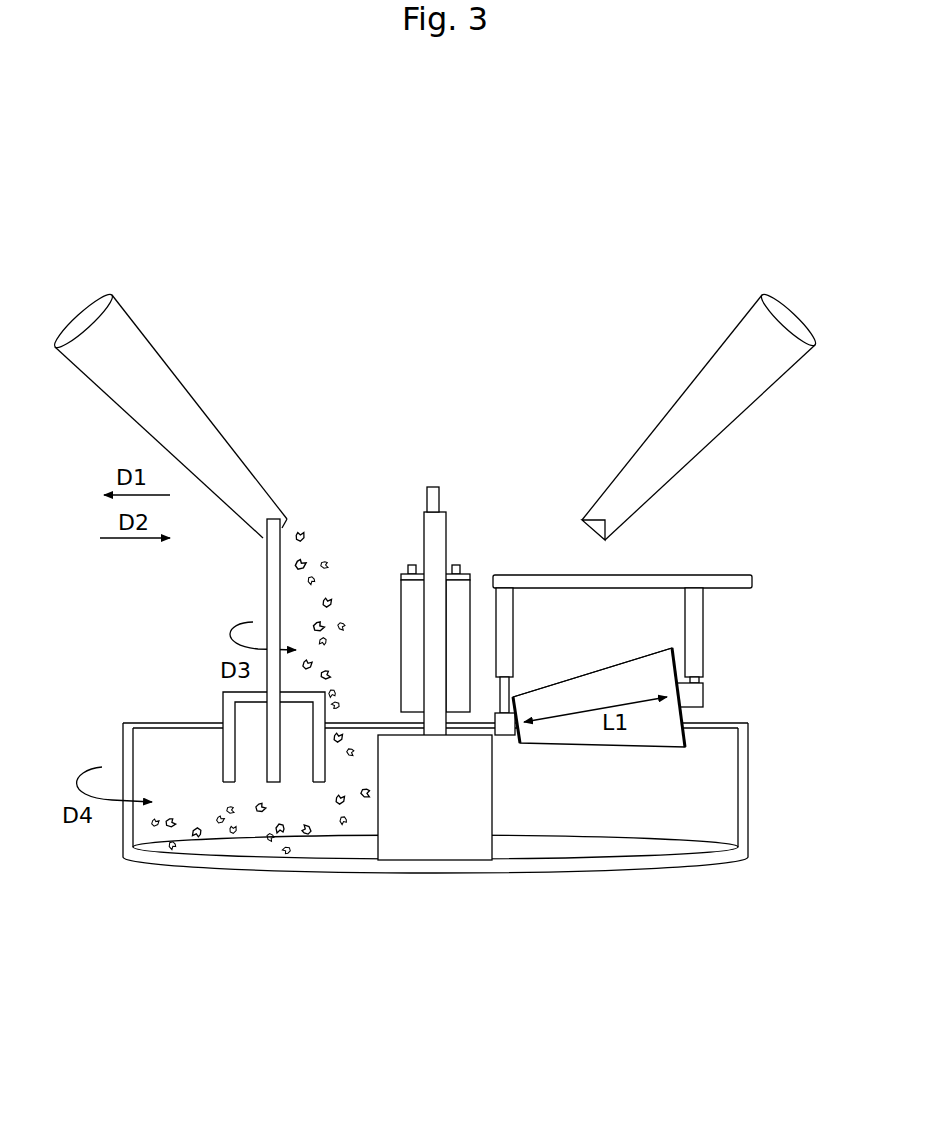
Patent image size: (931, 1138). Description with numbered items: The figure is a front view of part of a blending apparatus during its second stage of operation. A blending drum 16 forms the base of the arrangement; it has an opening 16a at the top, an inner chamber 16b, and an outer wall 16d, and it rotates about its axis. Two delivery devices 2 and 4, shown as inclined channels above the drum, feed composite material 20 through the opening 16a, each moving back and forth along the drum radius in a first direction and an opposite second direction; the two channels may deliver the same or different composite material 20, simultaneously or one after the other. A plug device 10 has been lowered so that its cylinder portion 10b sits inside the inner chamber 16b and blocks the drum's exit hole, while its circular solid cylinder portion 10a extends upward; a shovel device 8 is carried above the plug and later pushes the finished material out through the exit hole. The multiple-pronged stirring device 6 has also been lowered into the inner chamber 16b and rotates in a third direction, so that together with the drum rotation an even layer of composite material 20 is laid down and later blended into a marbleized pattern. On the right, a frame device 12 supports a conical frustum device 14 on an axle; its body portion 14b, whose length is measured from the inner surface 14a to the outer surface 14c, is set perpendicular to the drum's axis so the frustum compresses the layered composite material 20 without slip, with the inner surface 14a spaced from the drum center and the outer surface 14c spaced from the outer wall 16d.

The delivery device 2 is at (165, 378).
The delivery device 4 is at (685, 422).
The stirring device 6 is at (272, 602).
The shovel device 8 is at (433, 495).
The plug device 10 is at (438, 543).
The circular solid cylinder portion 10a is at (433, 668).
The cylinder portion 10b is at (467, 815).
The frame device 12 is at (665, 580).
The conical frustum device 14 is at (613, 677).
The inner surface 14a is at (515, 705).
The body portion 14b is at (653, 673).
The outer surface 14c is at (677, 707).
The blending drum 16 is at (148, 758).
The opening 16a is at (158, 740).
The inner chamber 16b is at (188, 758).
The outer wall 16d is at (743, 787).
The composite material 20 is at (310, 553).